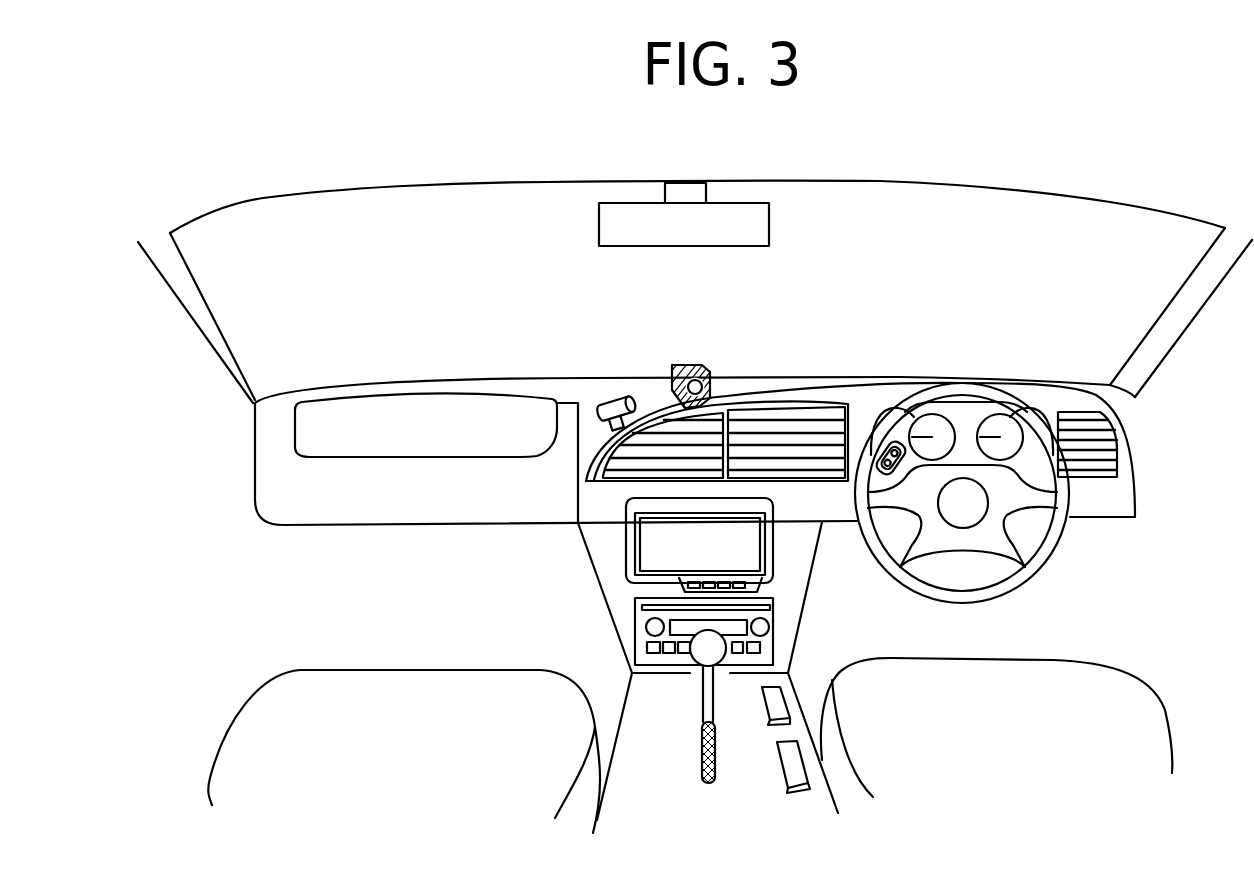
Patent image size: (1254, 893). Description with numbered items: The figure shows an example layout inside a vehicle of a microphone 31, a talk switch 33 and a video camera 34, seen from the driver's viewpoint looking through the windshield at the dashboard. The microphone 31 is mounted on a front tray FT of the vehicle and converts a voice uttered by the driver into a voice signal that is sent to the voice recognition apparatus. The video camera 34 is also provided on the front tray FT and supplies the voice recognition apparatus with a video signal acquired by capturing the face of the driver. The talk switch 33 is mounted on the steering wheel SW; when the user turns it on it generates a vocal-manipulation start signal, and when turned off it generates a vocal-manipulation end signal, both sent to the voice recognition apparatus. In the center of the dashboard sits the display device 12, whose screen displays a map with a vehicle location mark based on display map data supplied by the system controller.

The front tray FT is at (557, 392).
The microphone 31 is at (620, 398).
The video camera 34 is at (692, 362).
The talk switch 33 is at (870, 448).
The steering wheel SW is at (960, 392).
The display device 12 is at (652, 545).